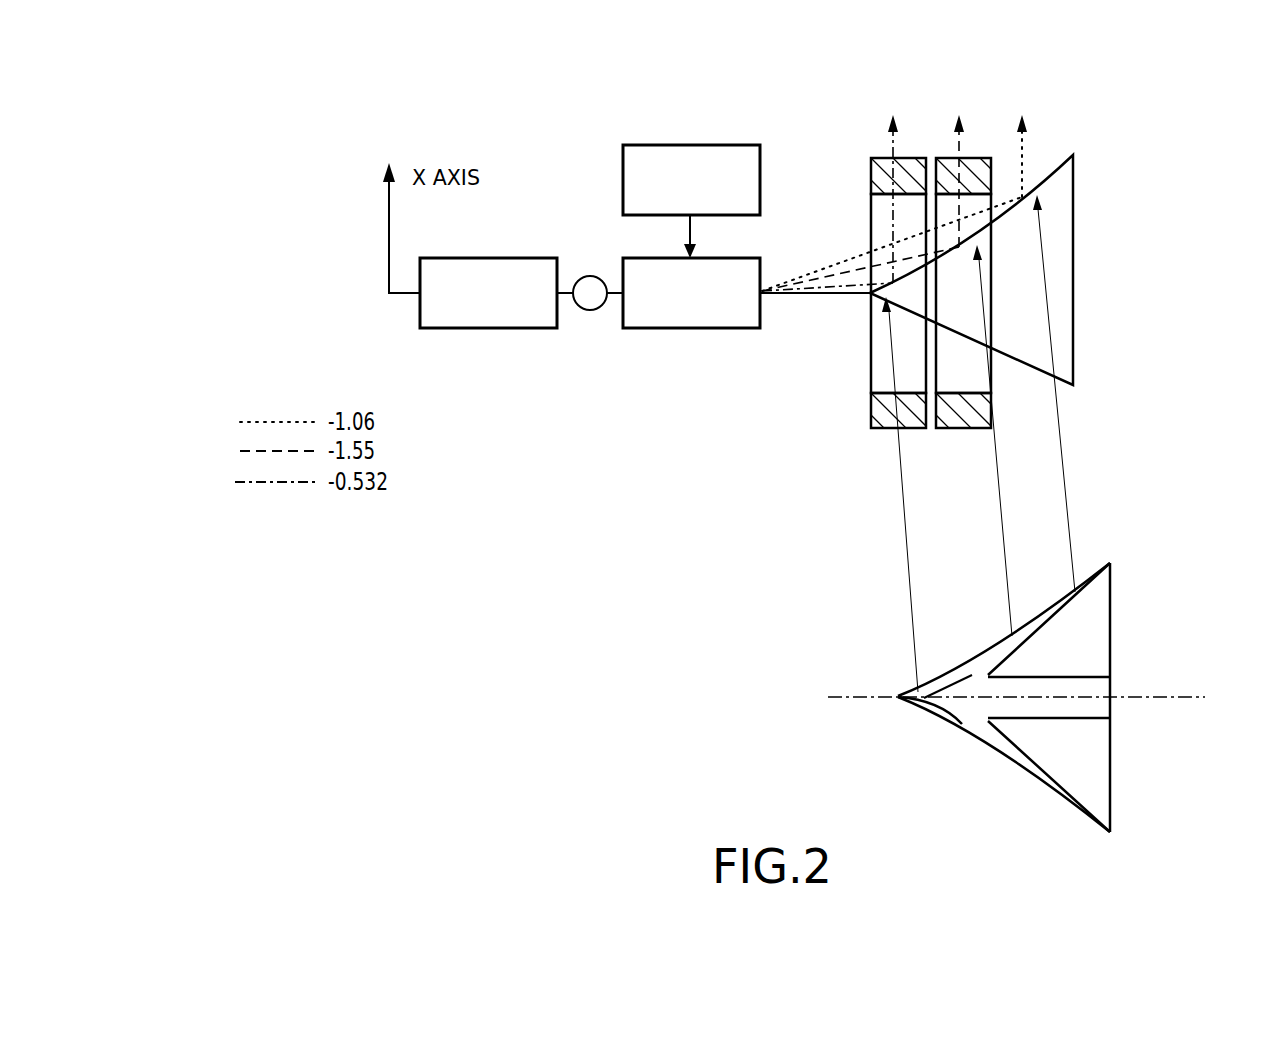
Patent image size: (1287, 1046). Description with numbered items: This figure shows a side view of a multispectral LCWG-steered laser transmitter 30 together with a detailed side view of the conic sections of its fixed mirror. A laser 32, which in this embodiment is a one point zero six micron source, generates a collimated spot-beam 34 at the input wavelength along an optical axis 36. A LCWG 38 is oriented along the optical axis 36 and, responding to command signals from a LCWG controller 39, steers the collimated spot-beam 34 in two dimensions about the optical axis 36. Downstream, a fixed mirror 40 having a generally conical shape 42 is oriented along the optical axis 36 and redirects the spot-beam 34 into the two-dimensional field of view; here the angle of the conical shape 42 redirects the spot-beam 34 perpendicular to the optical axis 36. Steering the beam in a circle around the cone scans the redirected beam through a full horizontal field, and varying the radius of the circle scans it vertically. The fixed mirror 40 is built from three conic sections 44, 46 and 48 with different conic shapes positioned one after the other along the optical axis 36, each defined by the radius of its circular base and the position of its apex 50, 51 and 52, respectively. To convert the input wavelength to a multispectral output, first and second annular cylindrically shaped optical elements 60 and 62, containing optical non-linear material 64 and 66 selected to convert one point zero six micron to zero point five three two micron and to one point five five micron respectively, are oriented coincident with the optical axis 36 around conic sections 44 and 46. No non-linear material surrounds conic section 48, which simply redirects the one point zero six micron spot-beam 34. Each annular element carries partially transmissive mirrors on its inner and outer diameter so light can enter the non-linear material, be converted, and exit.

The laser transmitter 30 is at (268, 118).
The laser 32 is at (490, 329).
The collimated spot-beam 34 is at (588, 310).
The optical axis 36 is at (806, 296).
The LCWG 38 is at (690, 329).
The LCWG controller 39 is at (623, 166).
The fixed mirror 40 is at (1073, 252).
The conical shape 42 is at (808, 593).
The first conic section 44 is at (920, 705).
The second conic section 46 is at (985, 738).
The third conic section 48 is at (1067, 793).
The apex of first conic section 50 is at (898, 696).
The apex of second conic section 51 is at (924, 697).
The apex of third conic section 52 is at (988, 673).
The first annular cylindrically shaped optical element 60 is at (871, 170).
The second annular cylindrically shaped optical element 62 is at (991, 170).
The optical non-linear material 64 is at (871, 412).
The optical non-linear material 66 is at (991, 412).